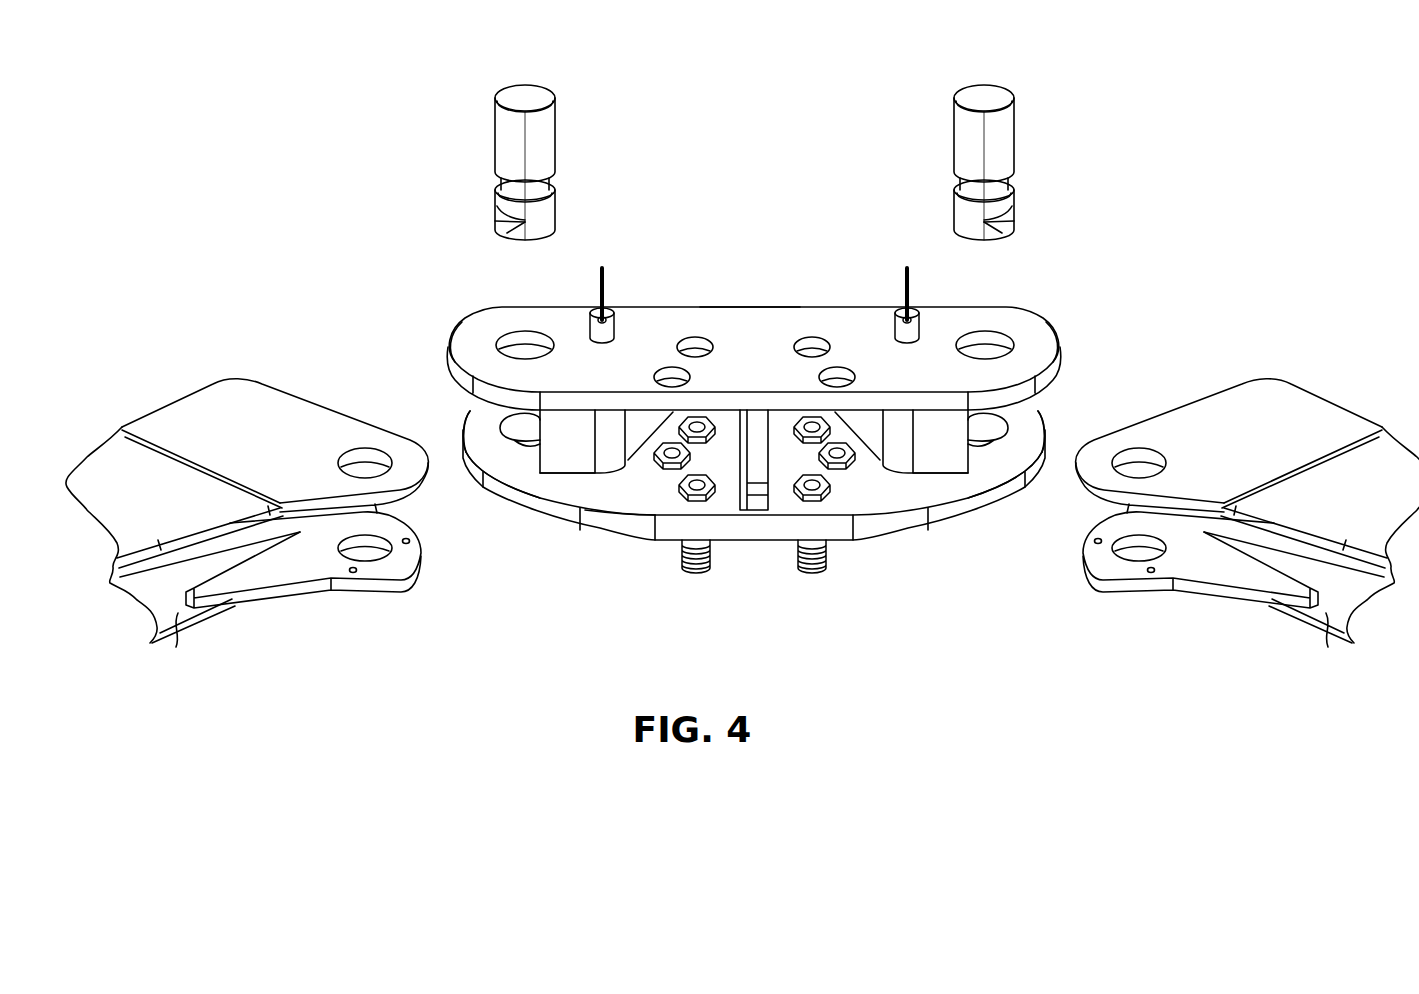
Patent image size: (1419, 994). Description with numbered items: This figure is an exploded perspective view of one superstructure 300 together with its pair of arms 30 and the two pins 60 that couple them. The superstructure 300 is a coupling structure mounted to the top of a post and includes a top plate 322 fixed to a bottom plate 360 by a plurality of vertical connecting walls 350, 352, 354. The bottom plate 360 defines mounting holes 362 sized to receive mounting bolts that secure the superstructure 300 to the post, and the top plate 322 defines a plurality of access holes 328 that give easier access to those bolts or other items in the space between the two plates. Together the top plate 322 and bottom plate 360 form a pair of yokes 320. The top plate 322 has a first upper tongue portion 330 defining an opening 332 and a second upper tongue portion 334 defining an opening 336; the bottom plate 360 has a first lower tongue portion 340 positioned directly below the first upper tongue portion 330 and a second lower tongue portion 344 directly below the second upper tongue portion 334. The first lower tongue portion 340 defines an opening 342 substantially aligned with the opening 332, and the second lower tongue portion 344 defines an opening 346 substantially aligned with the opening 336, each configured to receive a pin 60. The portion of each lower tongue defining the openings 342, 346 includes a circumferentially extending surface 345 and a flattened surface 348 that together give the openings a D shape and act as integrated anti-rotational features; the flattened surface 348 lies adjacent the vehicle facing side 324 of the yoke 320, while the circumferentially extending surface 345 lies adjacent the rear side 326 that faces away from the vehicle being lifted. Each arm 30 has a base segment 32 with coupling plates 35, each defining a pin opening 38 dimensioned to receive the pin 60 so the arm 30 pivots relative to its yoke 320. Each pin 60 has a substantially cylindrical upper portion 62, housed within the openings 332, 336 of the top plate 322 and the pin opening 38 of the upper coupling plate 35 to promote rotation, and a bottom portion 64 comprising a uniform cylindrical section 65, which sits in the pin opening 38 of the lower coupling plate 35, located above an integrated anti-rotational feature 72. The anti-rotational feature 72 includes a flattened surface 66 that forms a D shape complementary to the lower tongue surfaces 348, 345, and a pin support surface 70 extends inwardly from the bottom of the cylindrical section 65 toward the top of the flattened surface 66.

The arm 30 is at (742, 487).
The base segment 32 is at (752, 636).
The coupling plate 35 is at (282, 555).
The pin opening 38 is at (340, 453).
The pin 60 is at (765, 155).
The upper portion 62 is at (495, 119).
The bottom portion 64 is at (556, 212).
The uniform cylindrical section 65 is at (500, 203).
The flattened surface 66 is at (515, 230).
The pin support surface 70 is at (510, 220).
The anti-rotational feature 72 is at (765, 220).
The superstructure 300 is at (757, 417).
The yoke 320 is at (756, 510).
The top plate 322 is at (757, 325).
The vehicle facing side 324 is at (756, 499).
The rear side 326 is at (747, 290).
The access holes 328 is at (700, 380).
The first upper tongue portion 330 is at (1028, 325).
The opening 332 is at (953, 331).
The second upper tongue portion 334 is at (480, 325).
The opening 336 is at (560, 331).
The first lower tongue portion 340 is at (1030, 432).
The opening 342 is at (922, 498).
The second lower tongue portion 344 is at (482, 432).
The circumferentially extending surface 345 is at (522, 425).
The opening 346 is at (590, 497).
The flattened surface 348 is at (478, 450).
The vertical wall 350 is at (565, 455).
The vertical wall 352 is at (938, 455).
The vertical wall 354 is at (748, 506).
The bottom plate 360 is at (619, 528).
The mounting holes 362 is at (843, 462).